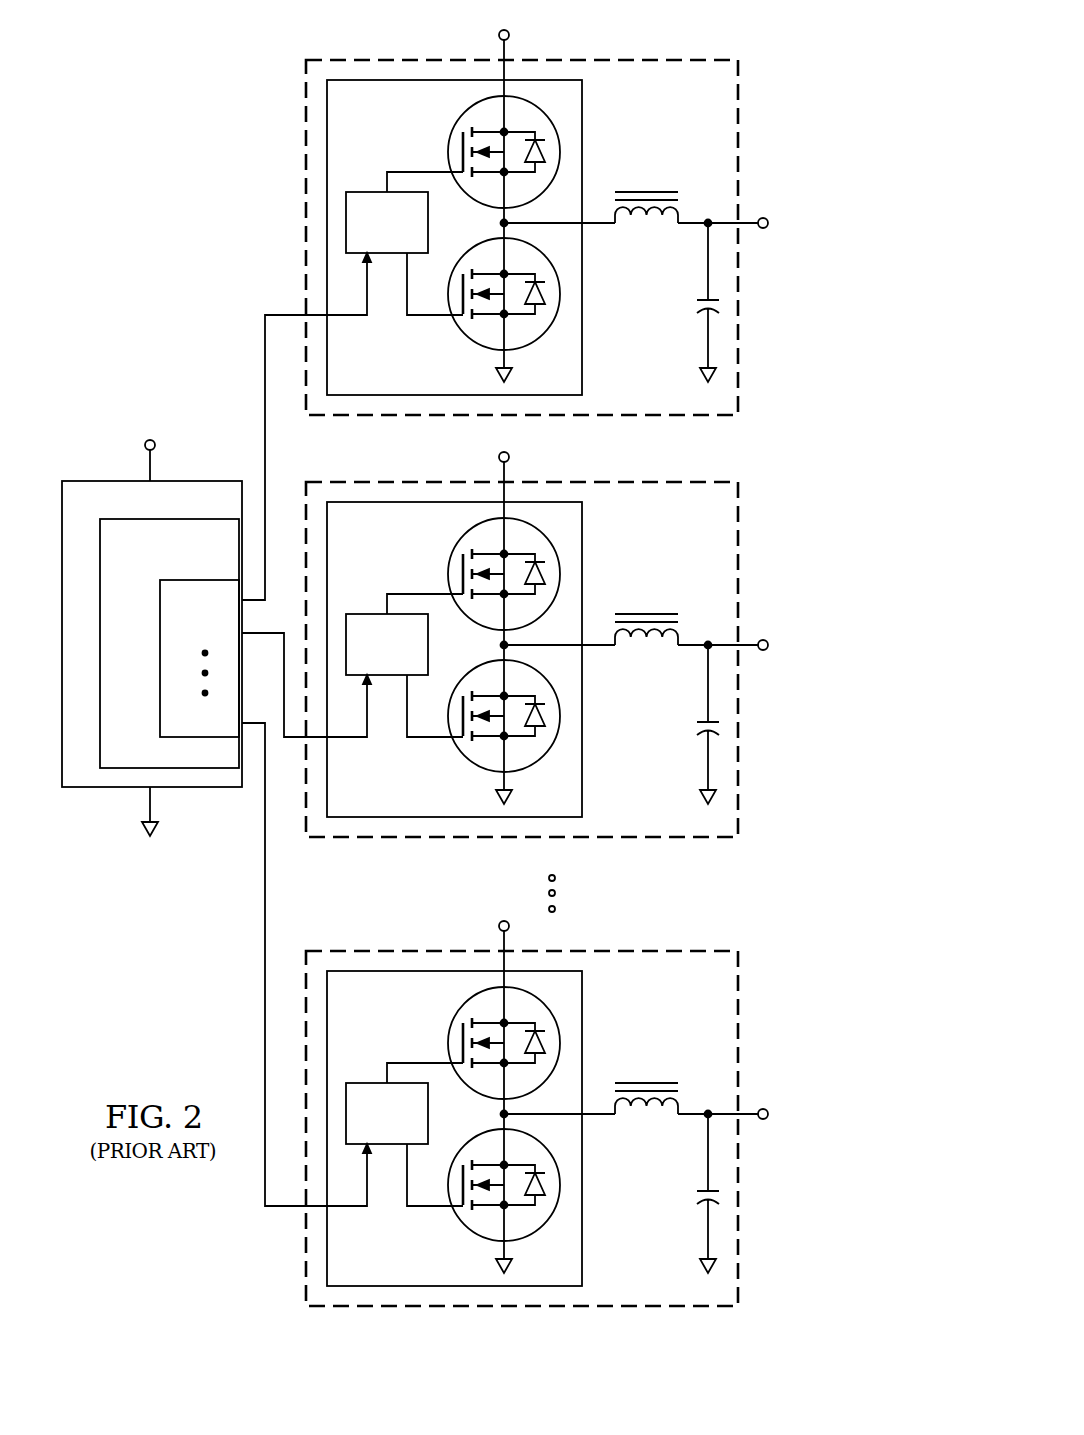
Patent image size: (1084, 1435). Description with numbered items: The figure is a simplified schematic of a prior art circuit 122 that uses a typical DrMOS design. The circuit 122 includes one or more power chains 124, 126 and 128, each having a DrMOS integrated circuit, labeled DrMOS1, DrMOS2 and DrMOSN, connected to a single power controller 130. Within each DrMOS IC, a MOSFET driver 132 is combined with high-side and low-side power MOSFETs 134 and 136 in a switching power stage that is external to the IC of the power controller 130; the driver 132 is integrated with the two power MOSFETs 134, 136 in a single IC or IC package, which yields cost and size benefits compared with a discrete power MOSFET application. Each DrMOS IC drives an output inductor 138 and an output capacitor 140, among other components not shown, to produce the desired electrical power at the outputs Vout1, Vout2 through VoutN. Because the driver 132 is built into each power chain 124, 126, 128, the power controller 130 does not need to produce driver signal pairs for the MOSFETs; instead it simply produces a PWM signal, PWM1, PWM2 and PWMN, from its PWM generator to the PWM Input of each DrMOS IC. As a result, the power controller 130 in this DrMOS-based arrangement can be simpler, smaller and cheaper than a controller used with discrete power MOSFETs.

The circuit 122 is at (138, 188).
The power chain 124 is at (749, 162).
The power chain 126 is at (749, 584).
The power chain 128 is at (748, 1205).
The power controller 130 is at (99, 475).
The MOSFET driver 132 is at (372, 192).
The high-side power MOSFET 134 is at (448, 146).
The low-side power MOSFET 136 is at (455, 322).
The output inductor 138 is at (657, 190).
The output capacitor 140 is at (697, 303).